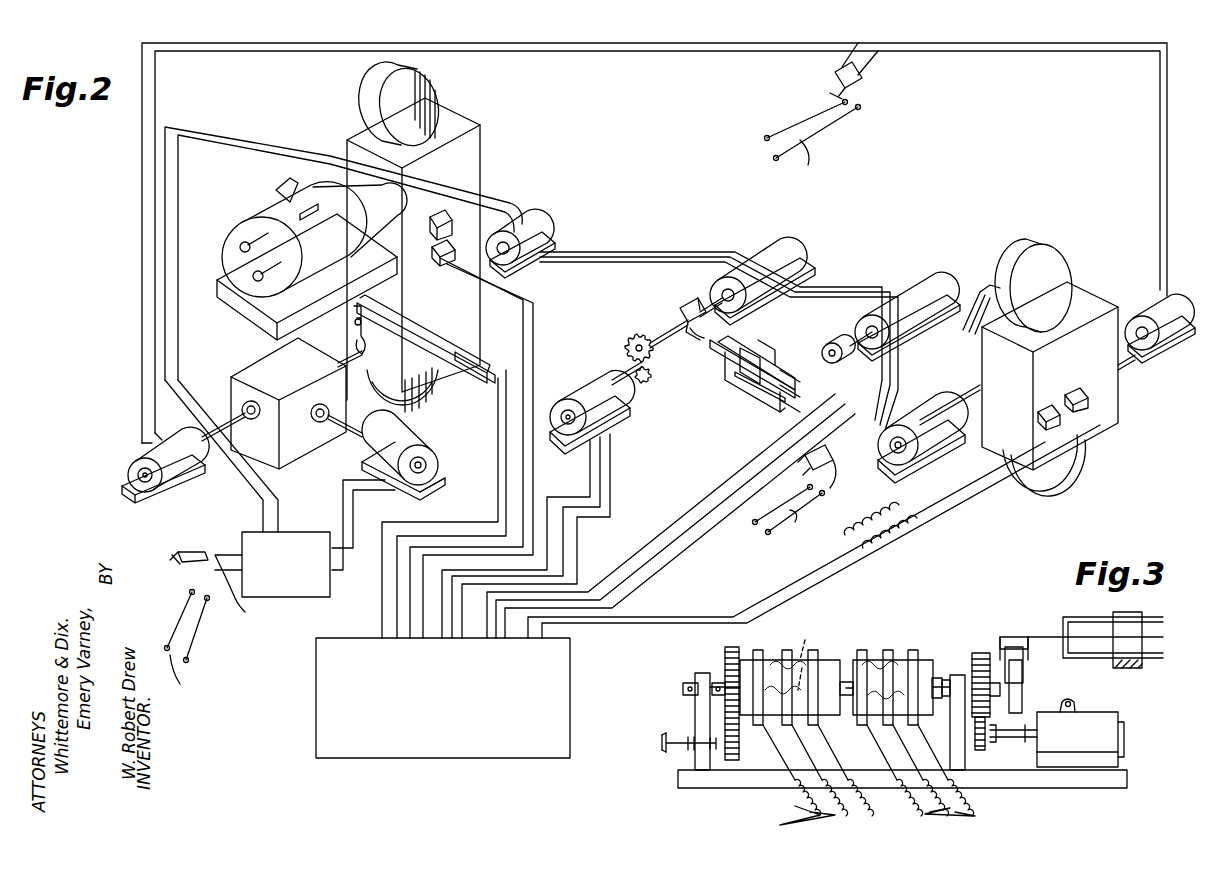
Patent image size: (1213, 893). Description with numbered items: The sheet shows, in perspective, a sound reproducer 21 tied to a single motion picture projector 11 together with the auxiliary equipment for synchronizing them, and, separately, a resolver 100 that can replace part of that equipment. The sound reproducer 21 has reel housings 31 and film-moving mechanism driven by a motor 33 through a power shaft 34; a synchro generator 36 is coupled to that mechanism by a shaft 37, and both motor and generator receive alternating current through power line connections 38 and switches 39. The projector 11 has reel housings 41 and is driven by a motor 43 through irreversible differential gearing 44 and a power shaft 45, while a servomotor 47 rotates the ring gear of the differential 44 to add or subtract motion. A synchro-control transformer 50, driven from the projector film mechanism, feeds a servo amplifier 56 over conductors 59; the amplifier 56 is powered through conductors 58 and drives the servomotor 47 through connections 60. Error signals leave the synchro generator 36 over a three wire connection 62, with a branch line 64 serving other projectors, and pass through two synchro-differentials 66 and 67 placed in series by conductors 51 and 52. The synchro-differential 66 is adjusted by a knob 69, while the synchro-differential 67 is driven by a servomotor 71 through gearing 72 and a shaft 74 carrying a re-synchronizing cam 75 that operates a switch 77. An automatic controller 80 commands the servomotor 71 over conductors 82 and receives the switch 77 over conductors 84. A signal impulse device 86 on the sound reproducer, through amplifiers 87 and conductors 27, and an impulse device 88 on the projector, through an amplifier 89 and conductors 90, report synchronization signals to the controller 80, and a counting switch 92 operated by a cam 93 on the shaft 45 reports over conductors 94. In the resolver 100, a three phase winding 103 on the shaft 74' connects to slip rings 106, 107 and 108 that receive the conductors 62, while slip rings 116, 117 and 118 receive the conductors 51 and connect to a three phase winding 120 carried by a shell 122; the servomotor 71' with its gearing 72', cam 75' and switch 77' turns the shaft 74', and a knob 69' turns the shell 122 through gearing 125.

In FIG. 2, the projector 11 is at (500, 172).
In FIG. 2, the film-reel housings 41 is at (440, 88).
In FIG. 2, the impulse device 88 is at (432, 215).
In FIG. 2, the amplifier 89 is at (450, 247).
In FIG. 2, the counting switch 92 is at (446, 315).
In FIG. 2, the cam 93 is at (365, 350).
In FIG. 2, the power shaft 45 is at (345, 355).
In FIG. 2, the differential gearing 44 is at (306, 368).
In FIG. 2, the motor 43 is at (196, 450).
In FIG. 2, the servomotor 47 is at (402, 438).
In FIG. 2, the synchro-control transformer 50 is at (552, 228).
In FIG. 2, the conductors 51 is at (620, 240).
In FIG. 3, the conductors 51 is at (780, 825).
In FIG. 2, the conductors 52 is at (850, 272).
In FIG. 2, the three wire connection 62 is at (898, 385).
In FIG. 3, the three wire connection 62 is at (975, 816).
In FIG. 2, the synchro-differential 67 is at (795, 255).
In FIG. 2, the synchro-differential 66 is at (932, 290).
In FIG. 2, the branch line 64 is at (985, 290).
In FIG. 2, the knob 69 is at (849, 362).
In FIG. 2, the gearing 72 is at (614, 343).
In FIG. 2, the shaft 74 is at (662, 324).
In FIG. 2, the re-synchronizing cam 75 is at (671, 306).
In FIG. 2, the servomotor 71 is at (610, 408).
In FIG. 2, the switch 77 is at (747, 395).
In FIG. 2, the conductors 82 is at (600, 482).
In FIG. 2, the conductors 90 is at (533, 350).
In FIG. 2, the conductors 94 is at (506, 445).
In FIG. 2, the conductors 84 is at (672, 557).
In FIG. 2, the conductors 27 is at (812, 572).
In FIG. 2, the synchro generator 36 is at (992, 414).
In FIG. 2, the shaft 37 is at (975, 385).
In FIG. 2, the sound reproducer 21 is at (1104, 273).
In FIG. 2, the housings 31 is at (1053, 255).
In FIG. 2, the signal impulse device 86 is at (1075, 420).
In FIG. 2, the amplifiers 87 is at (1058, 430).
In FIG. 2, the power shaft 34 is at (1130, 355).
In FIG. 2, the motor 33 is at (1176, 350).
In FIG. 2, the switches 39 is at (868, 82).
In FIG. 2, the power line connections 38 is at (812, 165).
In FIG. 2, the conductors 59 is at (280, 520).
In FIG. 2, the servo amplifier 56 is at (286, 564).
In FIG. 2, the conductors 58 is at (240, 593).
In FIG. 2, the connections 60 is at (340, 578).
In FIG. 2, the automatic controller 80 is at (590, 675).
In FIG. 3, the shell 122 is at (832, 720).
In FIG. 3, the gearing 125 is at (722, 652).
In FIG. 3, the knob 69' is at (669, 756).
In FIG. 3, the slip ring 116 is at (770, 650).
In FIG. 3, the slip ring 117 is at (790, 650).
In FIG. 3, the three phase winding 120 is at (816, 650).
In FIG. 3, the slip ring 118 is at (820, 650).
In FIG. 3, the shaft 74' is at (869, 640).
In FIG. 3, the slip ring 106 is at (860, 650).
In FIG. 3, the slip ring 107 is at (900, 655).
In FIG. 3, the three phase winding 103 is at (918, 648).
In FIG. 3, the resolver 100 is at (903, 641).
In FIG. 3, the slip ring 108 is at (936, 676).
In FIG. 3, the gearing 72' is at (991, 650).
In FIG. 3, the re-synchronizing cam 75' is at (1033, 675).
In FIG. 3, the switch 77' is at (1092, 626).
In FIG. 3, the servomotor 71' is at (1068, 723).